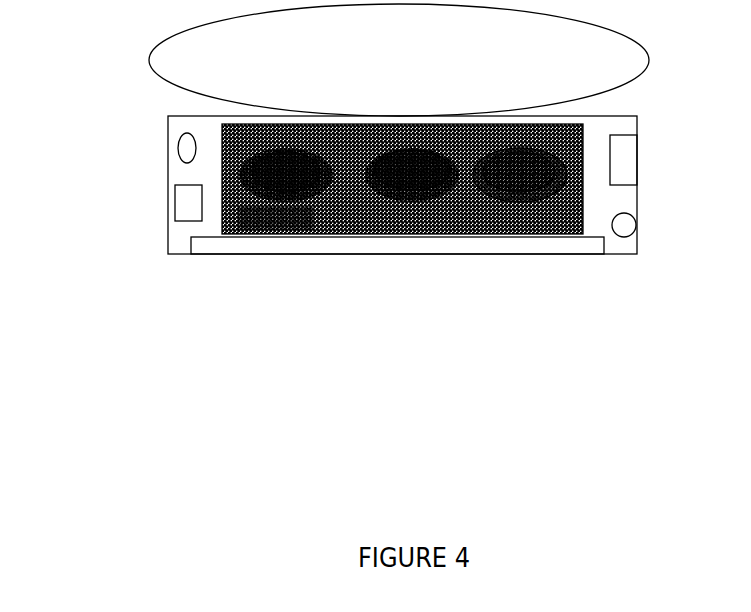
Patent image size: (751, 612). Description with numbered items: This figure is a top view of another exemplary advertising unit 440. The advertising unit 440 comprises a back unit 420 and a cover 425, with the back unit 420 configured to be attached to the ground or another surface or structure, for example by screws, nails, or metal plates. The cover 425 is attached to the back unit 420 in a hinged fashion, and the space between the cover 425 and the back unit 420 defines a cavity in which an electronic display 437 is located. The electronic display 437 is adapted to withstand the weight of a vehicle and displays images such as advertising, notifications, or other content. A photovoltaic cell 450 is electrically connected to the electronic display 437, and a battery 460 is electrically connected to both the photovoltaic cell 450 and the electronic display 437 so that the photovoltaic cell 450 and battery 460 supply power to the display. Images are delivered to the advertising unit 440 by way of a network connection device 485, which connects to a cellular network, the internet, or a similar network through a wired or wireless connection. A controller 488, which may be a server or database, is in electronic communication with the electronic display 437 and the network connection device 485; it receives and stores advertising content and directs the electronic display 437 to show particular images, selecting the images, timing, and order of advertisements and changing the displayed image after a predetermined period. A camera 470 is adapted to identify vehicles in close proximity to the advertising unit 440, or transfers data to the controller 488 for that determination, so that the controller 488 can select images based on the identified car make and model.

The back unit 420 is at (164, 242).
The cover 425 is at (158, 85).
The electronic display 437 is at (212, 126).
The advertising unit 440 is at (150, 303).
The photovoltaic cell 450 is at (168, 154).
The battery 460 is at (648, 162).
The camera 470 is at (167, 204).
The network connection device 485 is at (648, 229).
The controller 488 is at (387, 258).